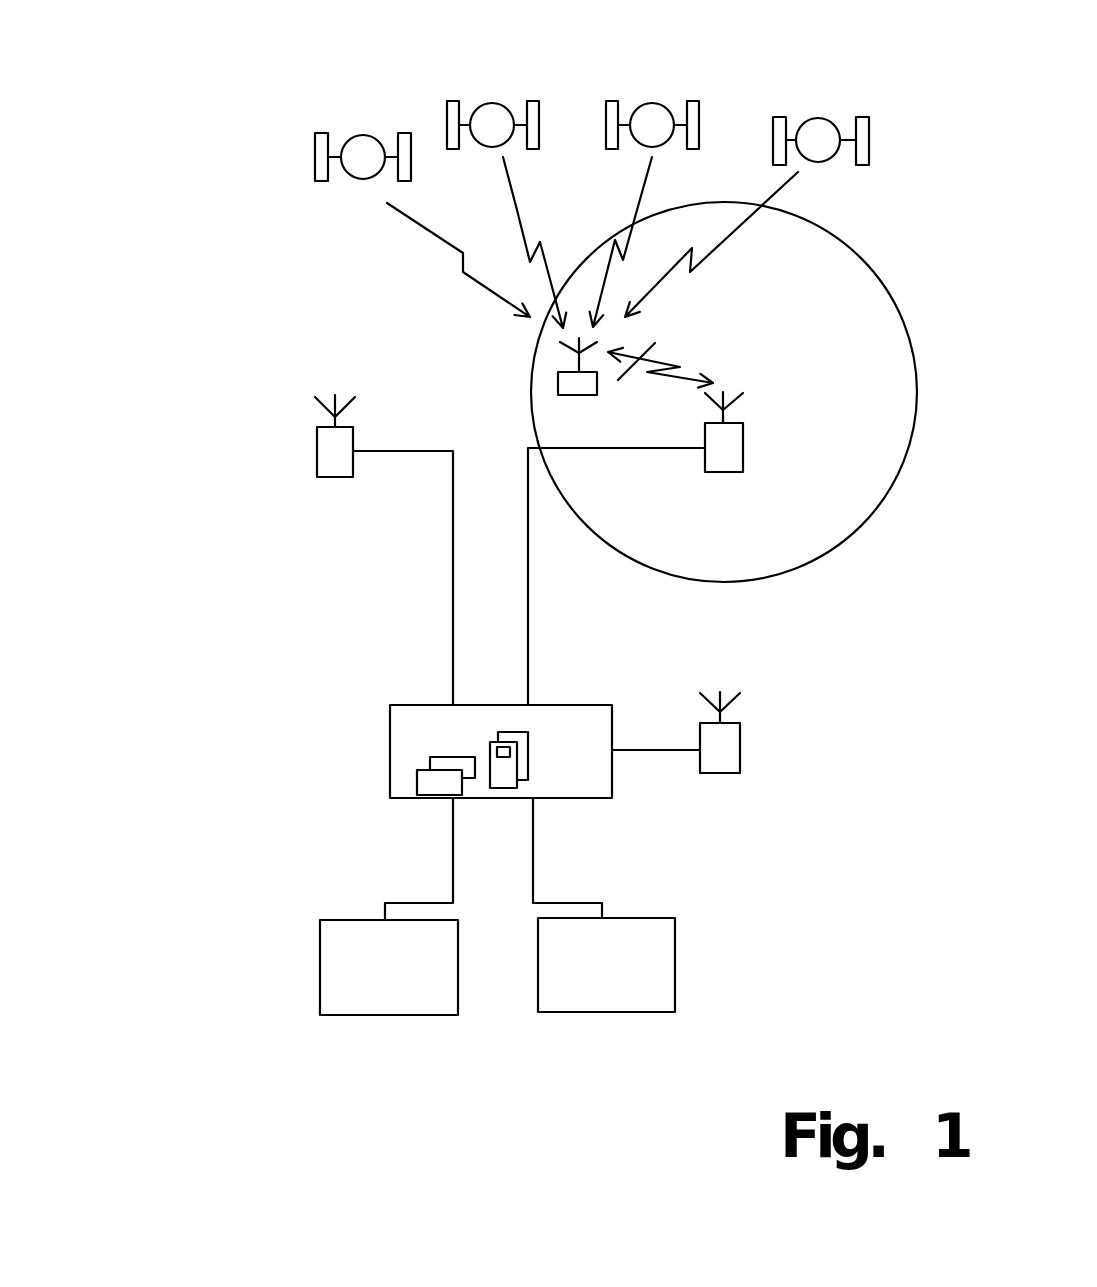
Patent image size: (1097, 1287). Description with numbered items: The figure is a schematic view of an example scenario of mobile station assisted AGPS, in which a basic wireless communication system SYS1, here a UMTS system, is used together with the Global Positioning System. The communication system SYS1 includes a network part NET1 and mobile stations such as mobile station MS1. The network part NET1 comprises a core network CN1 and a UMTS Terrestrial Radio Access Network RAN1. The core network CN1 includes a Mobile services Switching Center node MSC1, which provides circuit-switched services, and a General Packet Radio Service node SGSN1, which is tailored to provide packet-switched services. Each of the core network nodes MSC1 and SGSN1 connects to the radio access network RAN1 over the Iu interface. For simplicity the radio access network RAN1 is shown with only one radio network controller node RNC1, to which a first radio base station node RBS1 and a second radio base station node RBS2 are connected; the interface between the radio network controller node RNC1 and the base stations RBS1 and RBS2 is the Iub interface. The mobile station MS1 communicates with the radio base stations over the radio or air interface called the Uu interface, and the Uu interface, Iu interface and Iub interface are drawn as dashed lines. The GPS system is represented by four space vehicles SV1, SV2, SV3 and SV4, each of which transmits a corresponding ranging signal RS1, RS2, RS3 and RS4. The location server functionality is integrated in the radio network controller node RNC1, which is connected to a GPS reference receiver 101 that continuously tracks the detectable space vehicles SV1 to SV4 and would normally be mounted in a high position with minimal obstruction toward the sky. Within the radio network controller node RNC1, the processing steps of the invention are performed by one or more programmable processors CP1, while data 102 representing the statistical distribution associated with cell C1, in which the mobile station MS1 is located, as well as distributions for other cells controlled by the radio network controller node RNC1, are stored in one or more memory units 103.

The space vehicle SV1 is at (360, 134).
The space vehicle SV2 is at (492, 103).
The space vehicle SV3 is at (652, 103).
The space vehicle SV4 is at (818, 118).
The ranging signal RS1 is at (440, 252).
The ranging signal RS2 is at (512, 212).
The ranging signal RS3 is at (640, 197).
The ranging signal RS4 is at (778, 190).
The wireless communication system SYS1 is at (253, 207).
The network part NET1 is at (137, 327).
The radio access network RAN1 is at (214, 479).
The core network CN1 is at (241, 927).
The cell C1 is at (853, 535).
The mobile station MS1 is at (558, 378).
The Uu interface Uu is at (668, 325).
The first radio base station node RBS1 is at (743, 462).
The second radio base station node RBS2 is at (353, 466).
The Iub interface Iub is at (557, 667).
The Iu interface Iu is at (557, 857).
The radio network controller node RNC1 is at (390, 757).
The programmable processor CP1 is at (468, 758).
The data 102 is at (520, 733).
The memory unit 103 is at (528, 757).
The GPS reference receiver 101 is at (740, 765).
The Mobile services Switching Center node MSC1 is at (442, 1015).
The General Packet Radio Service node SGSN1 is at (660, 1012).